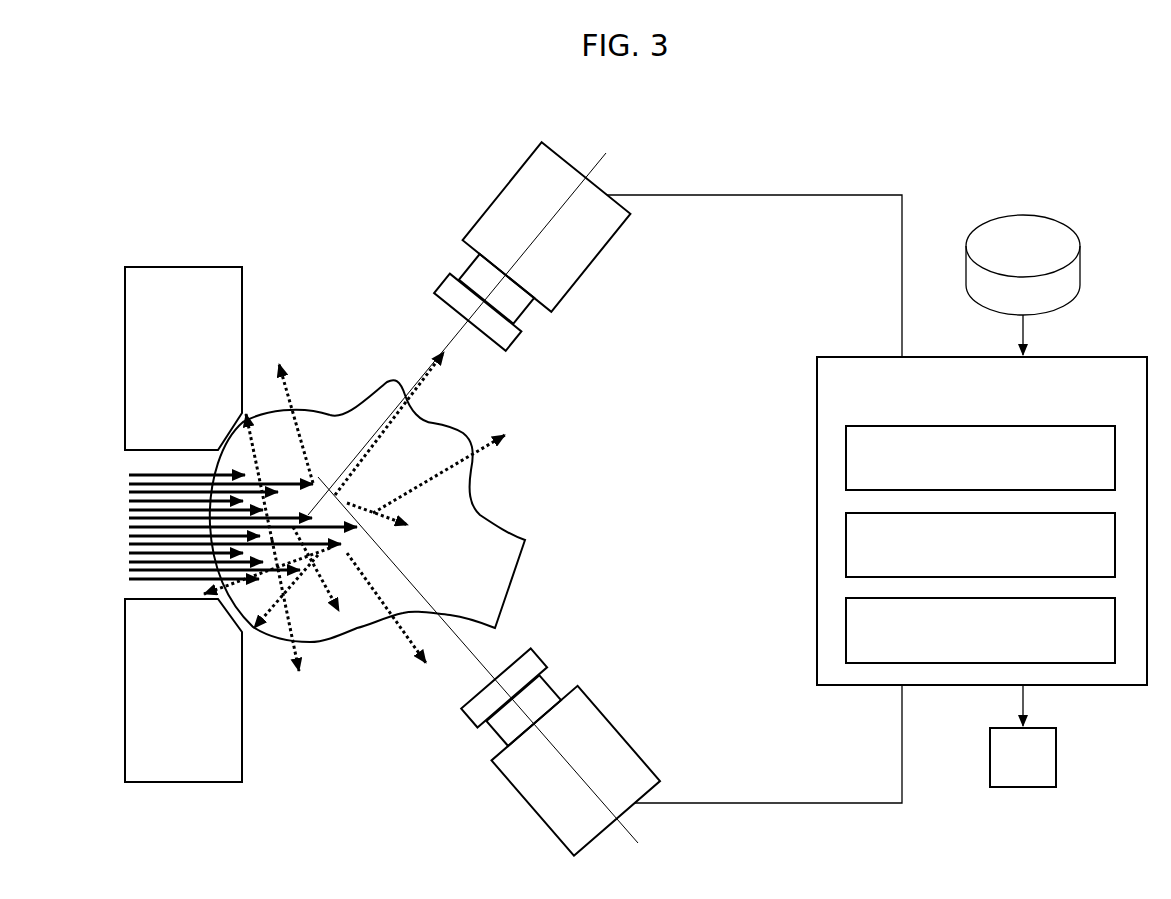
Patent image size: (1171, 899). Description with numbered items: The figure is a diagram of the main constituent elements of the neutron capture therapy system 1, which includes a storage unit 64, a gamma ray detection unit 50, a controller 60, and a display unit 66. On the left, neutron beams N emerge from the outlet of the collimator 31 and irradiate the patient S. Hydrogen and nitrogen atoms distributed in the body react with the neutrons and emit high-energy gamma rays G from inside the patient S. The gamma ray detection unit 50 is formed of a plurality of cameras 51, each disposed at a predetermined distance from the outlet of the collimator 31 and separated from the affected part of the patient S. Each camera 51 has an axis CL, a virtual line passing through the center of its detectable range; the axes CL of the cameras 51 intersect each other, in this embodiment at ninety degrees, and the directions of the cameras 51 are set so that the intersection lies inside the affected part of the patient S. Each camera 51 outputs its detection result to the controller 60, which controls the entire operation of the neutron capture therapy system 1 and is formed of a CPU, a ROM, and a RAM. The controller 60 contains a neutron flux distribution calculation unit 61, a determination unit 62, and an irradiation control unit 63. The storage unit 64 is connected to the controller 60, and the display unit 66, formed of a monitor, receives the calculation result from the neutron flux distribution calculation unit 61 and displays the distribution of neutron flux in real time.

The neutron capture therapy system 1 is at (133, 174).
The collimator 31 is at (125, 363).
The neutron beams N is at (150, 477).
The gamma rays G is at (297, 390).
The patient S is at (332, 633).
The axis CL is at (455, 346).
The gamma ray detection unit 50 is at (553, 499).
The camera 51 is at (498, 196).
The controller 60 is at (817, 400).
The neutron flux distribution calculation unit 61 is at (846, 458).
The determination unit 62 is at (846, 545).
The irradiation control unit 63 is at (846, 630).
The storage unit 64 is at (1023, 212).
The display unit 66 is at (1057, 756).